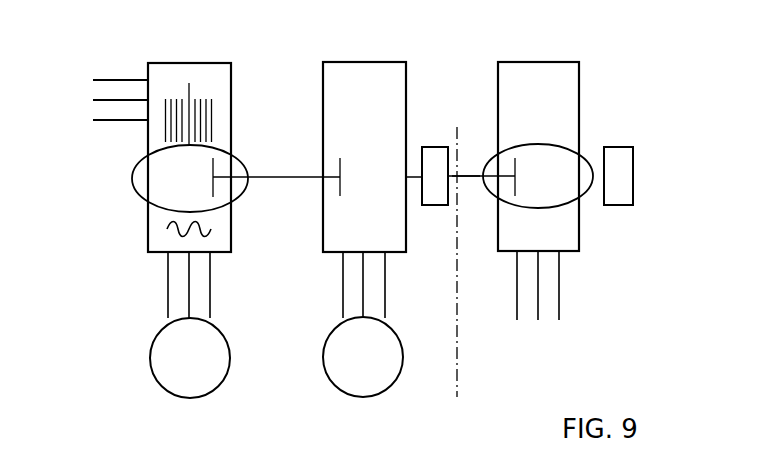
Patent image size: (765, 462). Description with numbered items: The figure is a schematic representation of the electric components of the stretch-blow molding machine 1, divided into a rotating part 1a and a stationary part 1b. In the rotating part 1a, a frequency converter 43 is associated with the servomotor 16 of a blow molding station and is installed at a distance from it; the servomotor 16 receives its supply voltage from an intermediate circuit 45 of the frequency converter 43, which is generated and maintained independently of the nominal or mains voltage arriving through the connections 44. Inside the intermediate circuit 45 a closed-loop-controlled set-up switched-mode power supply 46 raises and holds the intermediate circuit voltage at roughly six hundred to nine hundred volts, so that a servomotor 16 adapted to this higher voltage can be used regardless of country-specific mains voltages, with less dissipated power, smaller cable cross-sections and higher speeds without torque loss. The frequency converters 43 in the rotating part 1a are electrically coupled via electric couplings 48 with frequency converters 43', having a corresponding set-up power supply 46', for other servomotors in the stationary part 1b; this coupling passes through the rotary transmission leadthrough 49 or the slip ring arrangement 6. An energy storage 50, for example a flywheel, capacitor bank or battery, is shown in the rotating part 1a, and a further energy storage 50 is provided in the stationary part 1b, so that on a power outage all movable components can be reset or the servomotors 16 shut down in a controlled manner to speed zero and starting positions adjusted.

The stretch-blow molding machine 1 is at (427, 393).
The rotating part 1a is at (265, 375).
The stationary part 1b is at (503, 374).
The slip ring arrangement 6 is at (468, 262).
The servomotor 16 is at (162, 393).
The frequency converter 43 is at (296, 141).
The frequency converter 43' is at (549, 174).
The connections 44 is at (109, 122).
The intermediate circuit 45 is at (238, 197).
The closed-loop-controlled set-up switched-mode power supply 46 is at (172, 181).
The closed-loop-controlled set-up switched-mode power supply 46' is at (538, 161).
The electric couplings 48 is at (298, 176).
The rotary transmission leadthrough 49 is at (466, 184).
The energy storage 50 is at (435, 205).